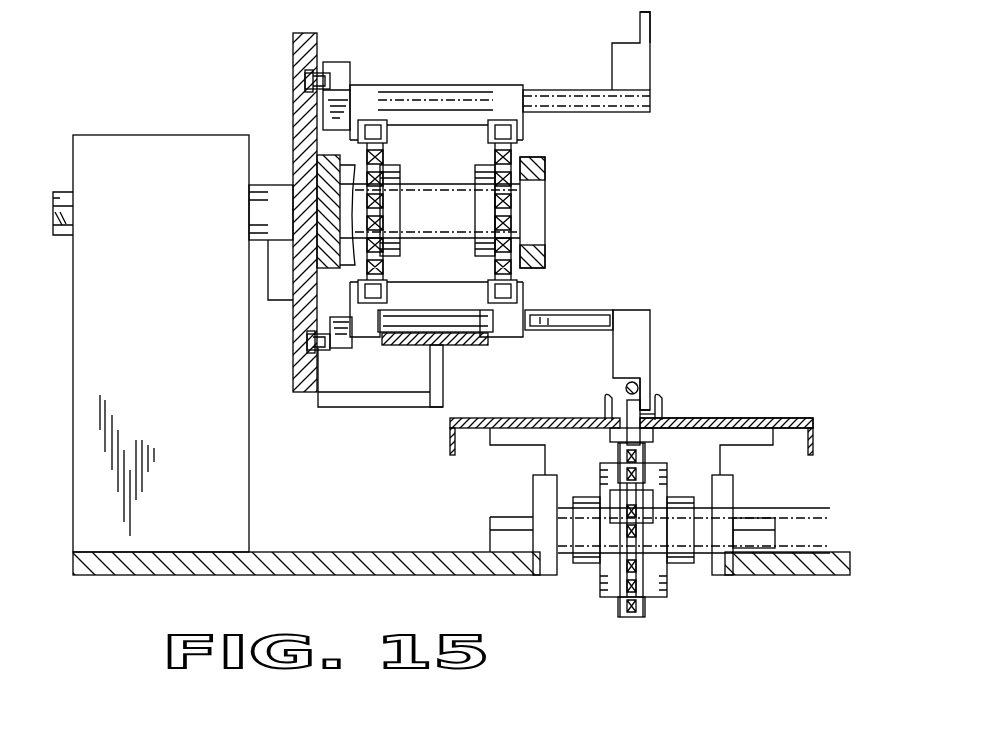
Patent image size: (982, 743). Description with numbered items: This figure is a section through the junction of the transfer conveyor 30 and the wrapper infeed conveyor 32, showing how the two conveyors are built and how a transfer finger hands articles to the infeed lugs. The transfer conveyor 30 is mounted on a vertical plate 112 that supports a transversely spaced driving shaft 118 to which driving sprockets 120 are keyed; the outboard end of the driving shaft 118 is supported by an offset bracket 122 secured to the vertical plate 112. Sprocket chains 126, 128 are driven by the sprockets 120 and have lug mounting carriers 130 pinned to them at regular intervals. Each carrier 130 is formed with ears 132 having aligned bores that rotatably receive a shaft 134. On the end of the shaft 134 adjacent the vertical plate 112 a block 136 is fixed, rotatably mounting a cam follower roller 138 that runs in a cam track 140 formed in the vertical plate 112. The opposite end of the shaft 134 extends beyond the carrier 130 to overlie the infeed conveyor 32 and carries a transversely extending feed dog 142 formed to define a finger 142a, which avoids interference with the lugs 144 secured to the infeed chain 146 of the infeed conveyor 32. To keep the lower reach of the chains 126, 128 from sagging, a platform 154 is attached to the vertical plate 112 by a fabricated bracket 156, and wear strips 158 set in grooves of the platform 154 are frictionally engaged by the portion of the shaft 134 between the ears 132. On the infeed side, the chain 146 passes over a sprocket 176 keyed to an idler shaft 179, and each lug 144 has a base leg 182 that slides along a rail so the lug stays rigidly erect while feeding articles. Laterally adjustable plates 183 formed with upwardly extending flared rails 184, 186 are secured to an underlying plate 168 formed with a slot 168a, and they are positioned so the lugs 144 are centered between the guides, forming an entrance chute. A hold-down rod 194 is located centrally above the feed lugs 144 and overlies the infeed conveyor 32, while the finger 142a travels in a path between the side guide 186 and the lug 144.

The transfer conveyor 30 is at (682, 84).
The wrapper infeed conveyor 32 is at (665, 578).
The vertical plate 112 is at (300, 248).
The driving shaft 118 is at (452, 214).
The driving sprockets 120 is at (508, 155).
The offset bracket 122 is at (322, 218).
The sprocket chain 126 is at (362, 133).
The sprocket chain 128 is at (518, 129).
The lug mounting carrier 130 is at (524, 77).
The ears 132 is at (500, 88).
The shaft 134 is at (650, 101).
The block 136 is at (348, 72).
The cam follower roller 138 is at (305, 80).
The cam track 140 is at (330, 78).
The feed dog 142 is at (645, 58).
The finger 142a is at (645, 26).
The lug 144 is at (620, 490).
The infeed chain 146 is at (645, 607).
The platform 154 is at (425, 347).
The fabricated bracket 156 is at (332, 405).
The wear strips 158 is at (485, 333).
The plate 168 is at (800, 417).
The slot 168a is at (663, 415).
The sprocket 176 is at (632, 565).
The idler shaft 179 is at (708, 523).
The base leg 182 is at (653, 460).
The laterally adjustable plates 183 is at (486, 418).
The flared rail 184 is at (600, 405).
The flared rail 186 is at (662, 405).
The hold-down rod 194 is at (625, 385).